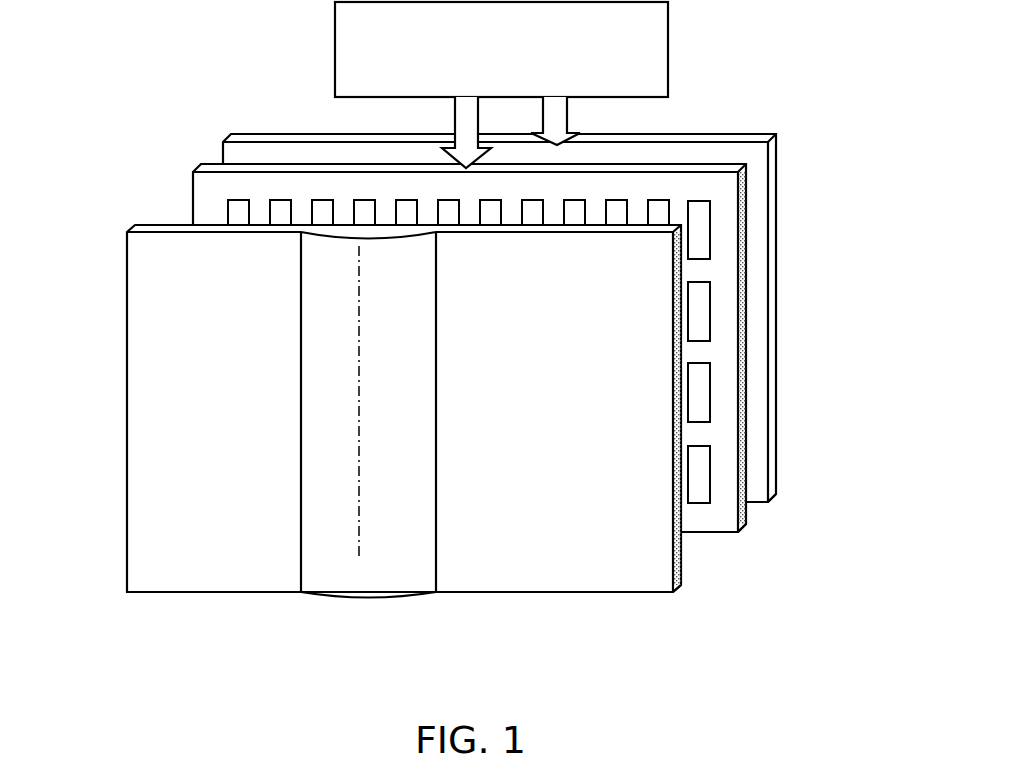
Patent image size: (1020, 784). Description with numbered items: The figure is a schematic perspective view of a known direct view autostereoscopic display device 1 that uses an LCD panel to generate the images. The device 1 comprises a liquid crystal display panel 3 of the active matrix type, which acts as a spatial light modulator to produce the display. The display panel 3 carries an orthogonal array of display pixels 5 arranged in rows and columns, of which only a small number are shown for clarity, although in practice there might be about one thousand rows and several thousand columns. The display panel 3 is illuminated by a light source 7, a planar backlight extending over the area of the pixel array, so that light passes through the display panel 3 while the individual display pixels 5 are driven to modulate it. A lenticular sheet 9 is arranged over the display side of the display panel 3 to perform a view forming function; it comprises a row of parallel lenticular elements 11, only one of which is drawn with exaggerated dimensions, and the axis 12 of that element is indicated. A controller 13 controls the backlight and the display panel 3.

The autostereoscopic display device 1 is at (453, 382).
The liquid crystal display panel 3 is at (746, 527).
The display pixels 5 is at (698, 222).
The light source 7 is at (776, 486).
The lenticular sheet 9 is at (680, 587).
The lenticular elements 11 is at (367, 586).
The rotation axis 12 is at (359, 428).
The controller 13 is at (668, 60).